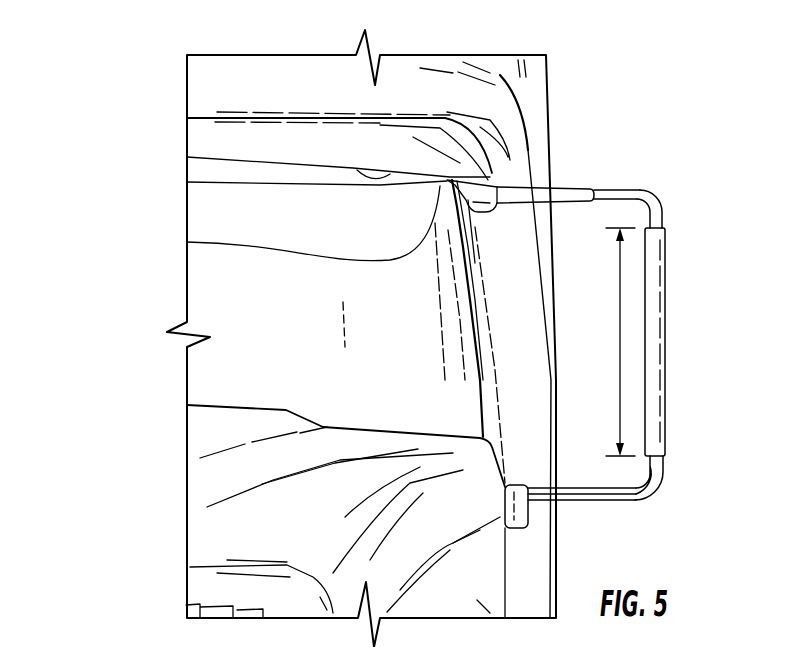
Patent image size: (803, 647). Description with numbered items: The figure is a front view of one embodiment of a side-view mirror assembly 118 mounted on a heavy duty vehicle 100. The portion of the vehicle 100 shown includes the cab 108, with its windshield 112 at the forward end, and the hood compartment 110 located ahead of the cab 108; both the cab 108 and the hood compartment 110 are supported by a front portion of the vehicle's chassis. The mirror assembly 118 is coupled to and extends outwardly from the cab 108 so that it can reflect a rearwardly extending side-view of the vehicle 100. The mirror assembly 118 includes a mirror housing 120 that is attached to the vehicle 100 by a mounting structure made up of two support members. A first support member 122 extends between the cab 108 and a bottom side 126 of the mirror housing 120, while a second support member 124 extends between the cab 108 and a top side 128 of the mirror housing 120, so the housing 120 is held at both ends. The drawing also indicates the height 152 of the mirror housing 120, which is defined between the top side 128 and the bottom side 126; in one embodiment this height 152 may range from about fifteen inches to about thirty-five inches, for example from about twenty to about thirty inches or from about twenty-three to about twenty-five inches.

The heavy duty vehicle 100 is at (128, 58).
The cab 108 is at (261, 84).
The windshield 112 is at (226, 299).
The hood compartment 110 is at (202, 509).
The side-view mirror assembly 118 is at (620, 344).
The mirror housing 120 is at (660, 345).
The first support member 122 is at (633, 497).
The second support member 124 is at (603, 192).
The bottom side 126 is at (665, 462).
The top side 128 is at (662, 222).
The height 152 is at (619, 362).